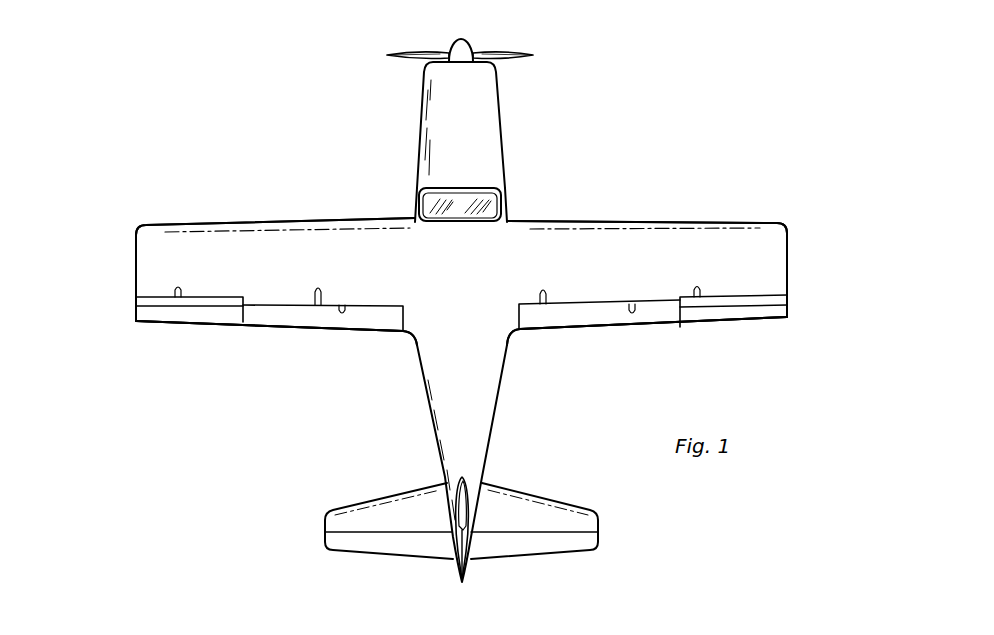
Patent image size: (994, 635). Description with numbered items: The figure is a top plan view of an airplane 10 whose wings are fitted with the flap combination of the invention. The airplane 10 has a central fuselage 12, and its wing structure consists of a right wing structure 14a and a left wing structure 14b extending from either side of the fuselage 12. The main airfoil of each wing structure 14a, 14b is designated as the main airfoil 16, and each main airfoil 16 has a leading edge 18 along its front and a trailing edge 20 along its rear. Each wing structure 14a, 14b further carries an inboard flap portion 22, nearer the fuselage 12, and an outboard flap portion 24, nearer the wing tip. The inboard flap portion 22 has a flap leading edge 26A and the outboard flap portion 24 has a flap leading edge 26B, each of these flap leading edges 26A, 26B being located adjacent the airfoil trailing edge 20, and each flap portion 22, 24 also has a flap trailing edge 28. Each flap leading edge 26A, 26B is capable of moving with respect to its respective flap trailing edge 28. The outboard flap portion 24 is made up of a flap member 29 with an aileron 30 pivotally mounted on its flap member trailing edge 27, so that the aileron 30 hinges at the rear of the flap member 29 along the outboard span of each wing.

The airplane 10 is at (674, 115).
The fuselage 12 is at (409, 413).
The right wing structure 14a is at (847, 223).
The left wing structure 14b is at (75, 225).
The main airfoil 16 is at (259, 247).
The leading edge 18 is at (200, 222).
The trailing edge 20 is at (340, 305).
The inboard flap portion 22 is at (278, 320).
The outboard flap portion 24 is at (115, 297).
The flap leading edge 26A is at (318, 306).
The flap leading edge 26B is at (178, 300).
The flap member trailing edge 27 is at (212, 310).
The flap trailing edge 28 is at (232, 324).
The flap member 29 is at (148, 306).
The aileron 30 is at (200, 318).